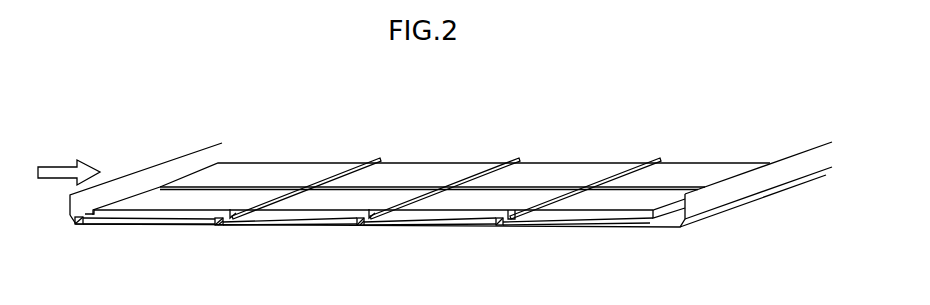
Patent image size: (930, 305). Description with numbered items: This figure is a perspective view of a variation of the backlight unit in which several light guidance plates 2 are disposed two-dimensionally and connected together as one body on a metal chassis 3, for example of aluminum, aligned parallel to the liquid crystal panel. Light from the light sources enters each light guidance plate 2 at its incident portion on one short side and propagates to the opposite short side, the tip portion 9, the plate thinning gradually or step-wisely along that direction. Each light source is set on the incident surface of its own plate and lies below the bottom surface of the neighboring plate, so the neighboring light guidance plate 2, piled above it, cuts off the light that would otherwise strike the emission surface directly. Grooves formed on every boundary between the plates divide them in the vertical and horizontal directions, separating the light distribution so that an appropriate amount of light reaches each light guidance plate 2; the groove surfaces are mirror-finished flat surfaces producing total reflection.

The light guidance plate 2 is at (187, 225).
The chassis 3 is at (589, 227).
The tip portion 9 is at (453, 173).